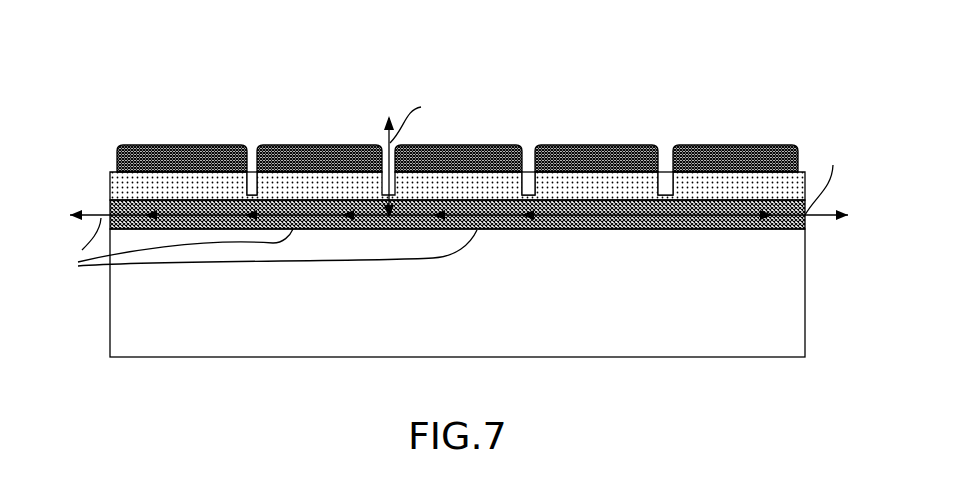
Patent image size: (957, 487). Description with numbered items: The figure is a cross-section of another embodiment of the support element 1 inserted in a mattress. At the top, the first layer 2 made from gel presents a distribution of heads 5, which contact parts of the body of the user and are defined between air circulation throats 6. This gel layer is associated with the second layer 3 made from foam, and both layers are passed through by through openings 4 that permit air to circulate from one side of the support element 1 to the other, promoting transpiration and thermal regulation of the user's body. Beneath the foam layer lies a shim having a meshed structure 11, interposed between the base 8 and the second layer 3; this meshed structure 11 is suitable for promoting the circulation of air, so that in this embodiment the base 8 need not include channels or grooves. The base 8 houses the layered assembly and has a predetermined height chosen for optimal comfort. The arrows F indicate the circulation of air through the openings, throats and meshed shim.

The support element 1 is at (452, 216).
The first layer 2 is at (362, 177).
The second layer 3 is at (112, 188).
The through openings 4 is at (252, 190).
The heads 5 is at (178, 130).
The air circulation throats 6 is at (665, 147).
The base 8 is at (230, 345).
The meshed structure 11 is at (805, 230).